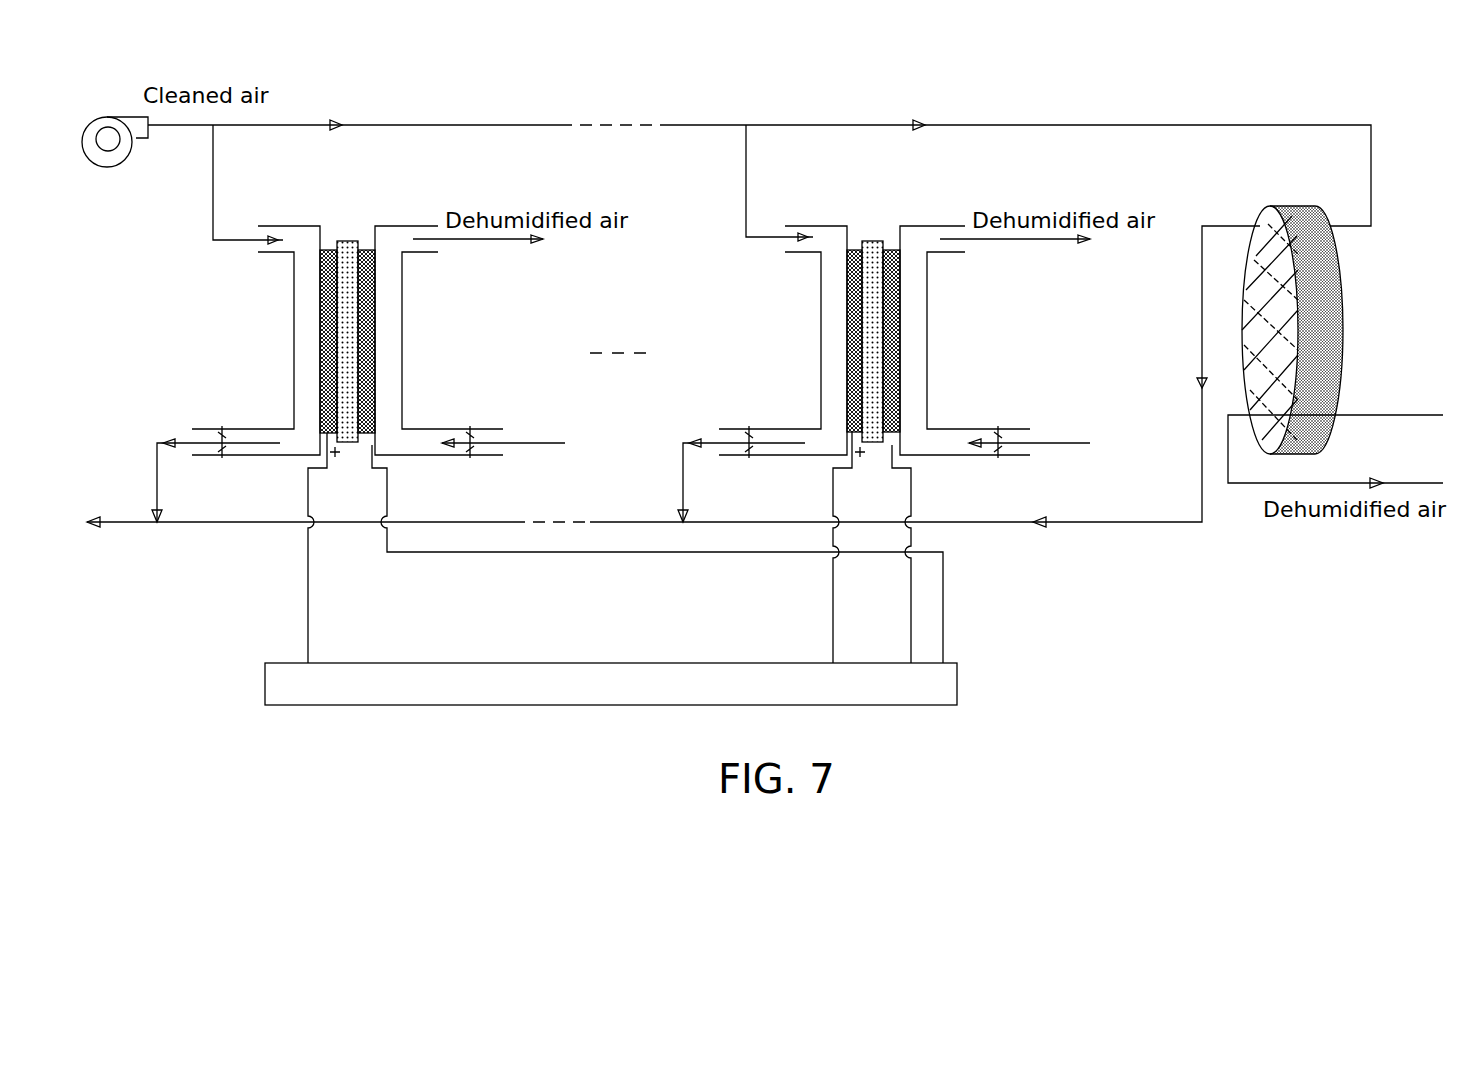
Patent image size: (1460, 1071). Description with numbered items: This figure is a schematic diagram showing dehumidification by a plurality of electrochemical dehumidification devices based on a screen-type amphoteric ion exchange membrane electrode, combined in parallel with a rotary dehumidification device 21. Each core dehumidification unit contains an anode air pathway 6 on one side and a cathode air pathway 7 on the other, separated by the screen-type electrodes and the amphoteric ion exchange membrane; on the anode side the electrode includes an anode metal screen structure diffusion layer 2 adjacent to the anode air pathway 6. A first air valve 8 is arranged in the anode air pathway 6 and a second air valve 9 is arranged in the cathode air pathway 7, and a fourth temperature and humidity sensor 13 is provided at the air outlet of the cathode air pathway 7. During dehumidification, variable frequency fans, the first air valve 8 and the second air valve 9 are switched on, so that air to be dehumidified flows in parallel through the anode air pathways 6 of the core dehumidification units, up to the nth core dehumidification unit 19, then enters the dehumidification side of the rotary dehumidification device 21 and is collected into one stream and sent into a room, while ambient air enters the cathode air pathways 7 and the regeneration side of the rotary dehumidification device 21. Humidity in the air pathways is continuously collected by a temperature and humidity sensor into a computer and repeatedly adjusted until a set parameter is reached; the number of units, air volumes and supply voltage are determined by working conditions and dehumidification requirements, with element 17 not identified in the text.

The anode metal screen structure diffusion layer 2 is at (329, 248).
The fourth temperature and humidity sensor 13 is at (364, 248).
The anode air pathway 6 is at (300, 364).
The cathode air pathway 7 is at (395, 362).
The first air valve 8 is at (222, 428).
The second air valve 9 is at (465, 430).
The controller 17 is at (611, 684).
The nth core dehumidification unit 19 is at (928, 343).
The rotary dehumidification device 21 is at (1343, 300).